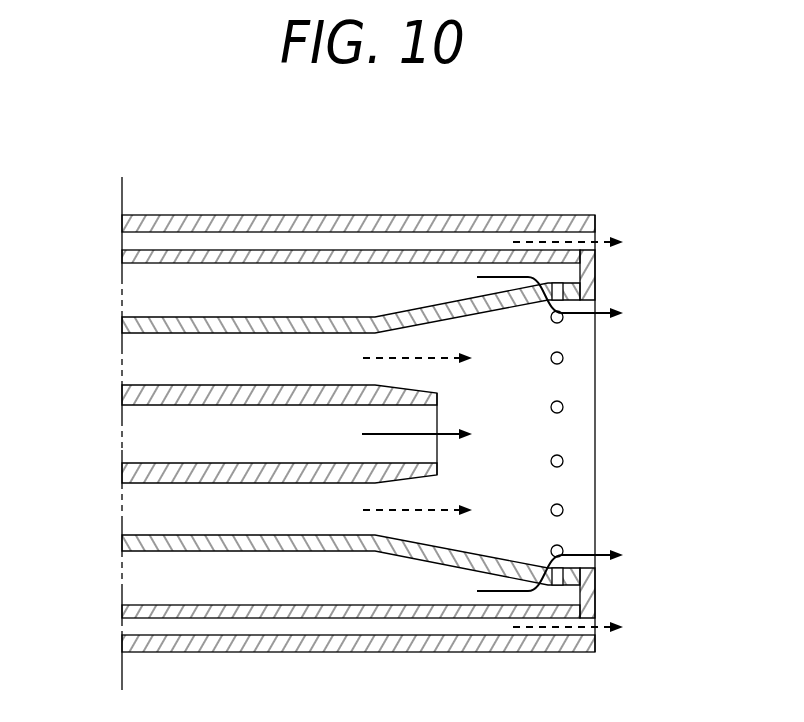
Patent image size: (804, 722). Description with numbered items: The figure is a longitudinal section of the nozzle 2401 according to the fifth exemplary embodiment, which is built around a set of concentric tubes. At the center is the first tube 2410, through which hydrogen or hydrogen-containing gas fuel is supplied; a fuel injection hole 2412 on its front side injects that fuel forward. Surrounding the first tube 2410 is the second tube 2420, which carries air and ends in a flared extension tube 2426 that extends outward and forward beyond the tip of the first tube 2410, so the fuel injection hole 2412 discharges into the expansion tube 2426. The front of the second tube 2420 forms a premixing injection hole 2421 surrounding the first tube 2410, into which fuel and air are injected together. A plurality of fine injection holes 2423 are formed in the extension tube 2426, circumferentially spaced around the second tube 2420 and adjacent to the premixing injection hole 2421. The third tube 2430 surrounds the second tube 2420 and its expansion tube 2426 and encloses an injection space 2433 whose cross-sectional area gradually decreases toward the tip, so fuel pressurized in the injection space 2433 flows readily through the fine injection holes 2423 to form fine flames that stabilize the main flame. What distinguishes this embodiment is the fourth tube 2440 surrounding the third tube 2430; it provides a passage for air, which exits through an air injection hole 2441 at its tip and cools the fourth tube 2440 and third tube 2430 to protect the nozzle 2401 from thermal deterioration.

The nozzle 2401 is at (337, 184).
The first tube 2410 is at (146, 457).
The fuel injection hole 2412 is at (437, 415).
The second tube 2420 is at (128, 325).
The premixing injection hole 2421 is at (596, 450).
The fine injection holes 2423 is at (563, 512).
The flared extension tube 2426 is at (415, 552).
The third tube 2430 is at (128, 257).
The injection space 2433 is at (436, 290).
The fourth tube 2440 is at (228, 222).
The air injection hole 2441 is at (596, 233).